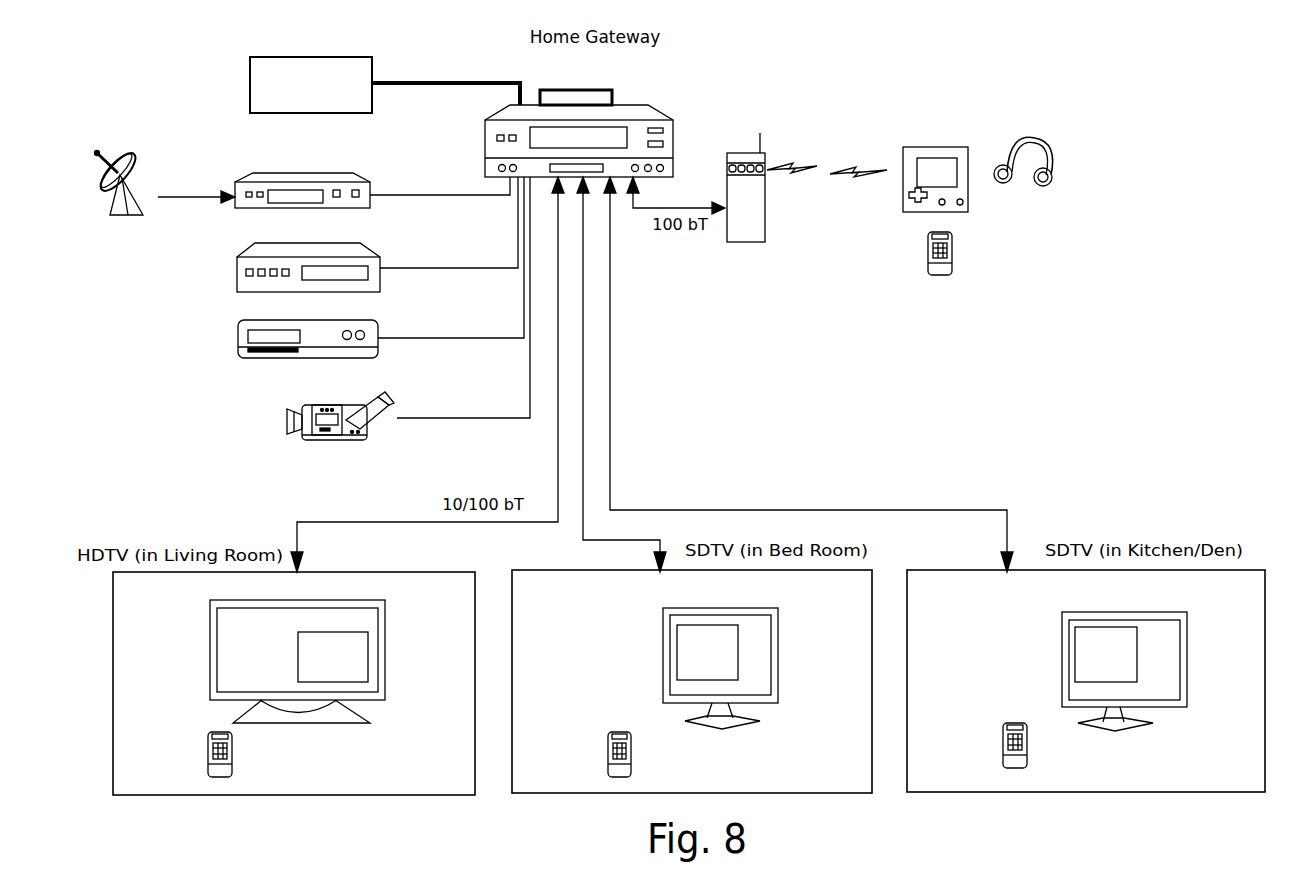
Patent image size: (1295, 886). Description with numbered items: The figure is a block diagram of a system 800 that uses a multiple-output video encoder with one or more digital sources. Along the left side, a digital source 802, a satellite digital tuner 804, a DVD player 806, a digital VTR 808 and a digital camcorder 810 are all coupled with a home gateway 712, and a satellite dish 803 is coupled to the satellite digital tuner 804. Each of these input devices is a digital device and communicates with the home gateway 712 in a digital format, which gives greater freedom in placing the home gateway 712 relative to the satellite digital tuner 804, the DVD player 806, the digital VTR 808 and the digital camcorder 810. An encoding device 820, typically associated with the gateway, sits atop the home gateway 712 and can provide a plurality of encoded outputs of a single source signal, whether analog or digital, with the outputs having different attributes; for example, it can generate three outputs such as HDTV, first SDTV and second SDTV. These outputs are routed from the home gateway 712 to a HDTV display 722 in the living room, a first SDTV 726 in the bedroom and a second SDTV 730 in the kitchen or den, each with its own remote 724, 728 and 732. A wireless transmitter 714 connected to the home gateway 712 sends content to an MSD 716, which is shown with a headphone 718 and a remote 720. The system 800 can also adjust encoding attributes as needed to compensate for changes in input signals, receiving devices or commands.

The system 800 is at (284, 824).
The digital source 802 is at (250, 73).
The satellite dish 803 is at (133, 153).
The satellite digital tuner 804 is at (235, 193).
The DVD player 806 is at (237, 272).
The digital VTR 808 is at (238, 338).
The digital camcorder 810 is at (303, 408).
The home gateway 712 is at (640, 103).
The encoding device 820 is at (584, 88).
The wireless transmitter 714 is at (752, 242).
The MSD 716 is at (925, 145).
The headphone 718 is at (1033, 137).
The remote 720 is at (952, 267).
The HDTV display 722 is at (210, 641).
The remote 724 is at (208, 748).
The first SDTV 726 is at (663, 649).
The remote 728 is at (608, 748).
The second SDTV 730 is at (1062, 653).
The remote 732 is at (1003, 743).